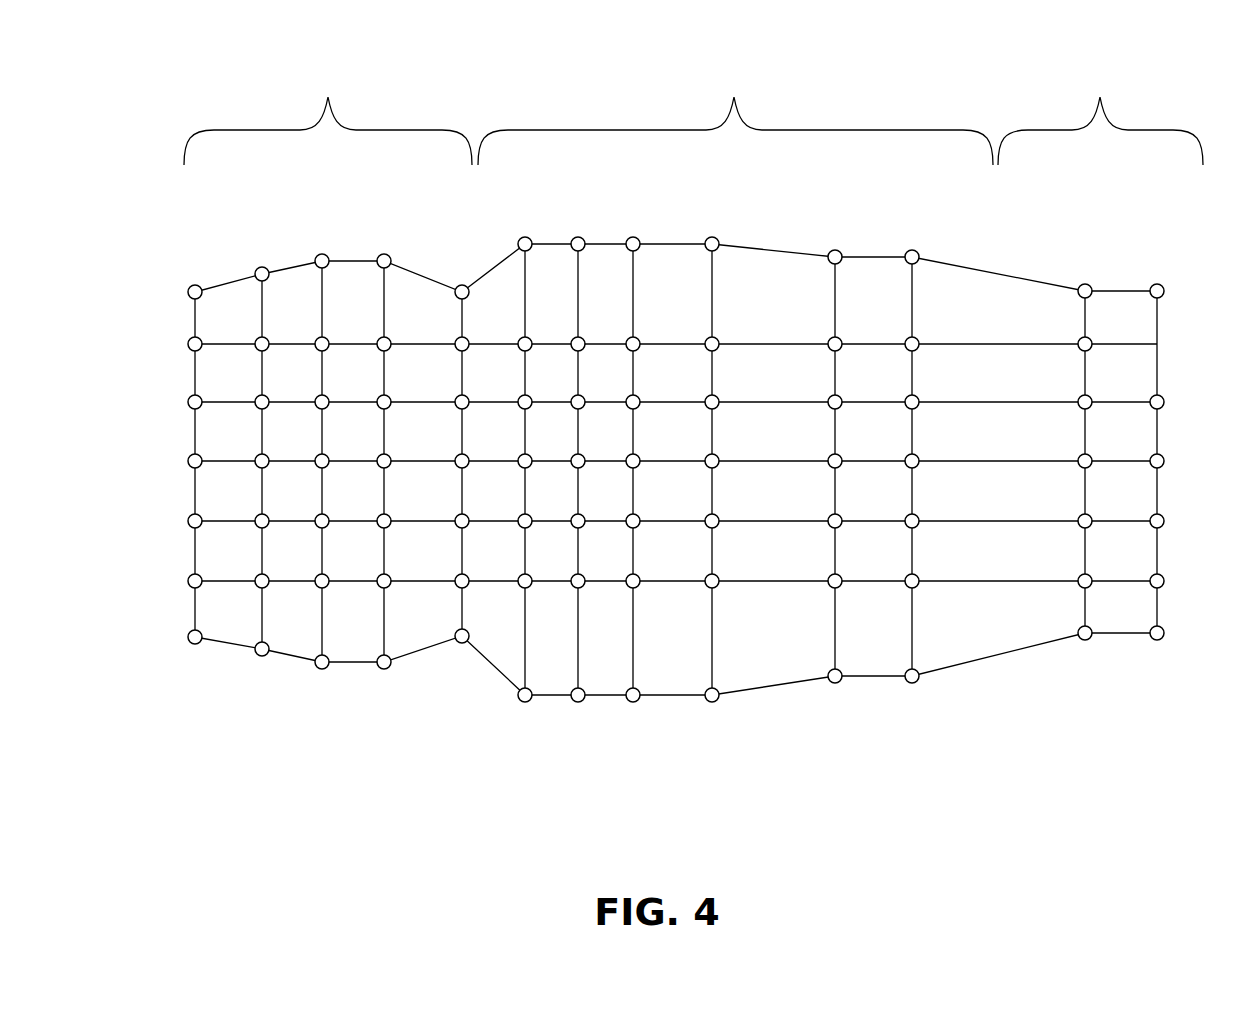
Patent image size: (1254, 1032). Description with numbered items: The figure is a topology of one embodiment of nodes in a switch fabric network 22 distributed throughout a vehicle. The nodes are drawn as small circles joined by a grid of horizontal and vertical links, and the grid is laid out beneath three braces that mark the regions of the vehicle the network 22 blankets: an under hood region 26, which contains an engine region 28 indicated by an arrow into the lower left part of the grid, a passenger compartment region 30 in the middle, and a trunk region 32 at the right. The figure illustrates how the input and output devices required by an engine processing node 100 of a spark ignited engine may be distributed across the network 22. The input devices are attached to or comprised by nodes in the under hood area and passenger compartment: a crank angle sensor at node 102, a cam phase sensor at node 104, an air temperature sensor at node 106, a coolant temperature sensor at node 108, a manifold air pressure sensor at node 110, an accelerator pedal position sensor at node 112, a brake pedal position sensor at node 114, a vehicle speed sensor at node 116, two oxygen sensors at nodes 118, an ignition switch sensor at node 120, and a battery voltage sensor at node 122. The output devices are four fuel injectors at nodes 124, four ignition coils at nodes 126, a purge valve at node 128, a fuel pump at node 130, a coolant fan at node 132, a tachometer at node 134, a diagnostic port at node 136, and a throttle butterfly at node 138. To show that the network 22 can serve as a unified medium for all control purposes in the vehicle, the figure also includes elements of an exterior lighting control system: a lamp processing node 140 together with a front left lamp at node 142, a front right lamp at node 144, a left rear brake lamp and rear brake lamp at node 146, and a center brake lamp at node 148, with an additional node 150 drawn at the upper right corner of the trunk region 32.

The switch fabric network 22 is at (782, 708).
The under hood region 26 is at (328, 95).
The engine region 28 is at (236, 618).
The passenger compartment region 30 is at (735, 95).
The trunk region 32 is at (1100, 95).
The engine processing node 100 is at (584, 456).
The node 102 is at (328, 339).
The node 104 is at (268, 339).
The node 106 is at (268, 456).
The node 108 is at (188, 406).
The node 110 is at (268, 397).
The node 112 is at (519, 526).
The node 114 is at (519, 586).
The node 116 is at (390, 657).
The node 118 is at (268, 516).
The node 120 is at (572, 586).
The node 122 is at (188, 348).
The node 124 is at (390, 397).
The node 126 is at (328, 397).
The node 128 is at (328, 657).
The node 130 is at (1165, 402).
The node 132 is at (188, 465).
The node 134 is at (584, 516).
The node 136 is at (318, 254).
The node 138 is at (390, 339).
The lamp processing node 140 is at (531, 690).
The node 142 is at (193, 646).
The node 144 is at (188, 296).
The node 146 is at (1165, 633).
The node 148 is at (1165, 461).
The node 150 is at (1165, 291).